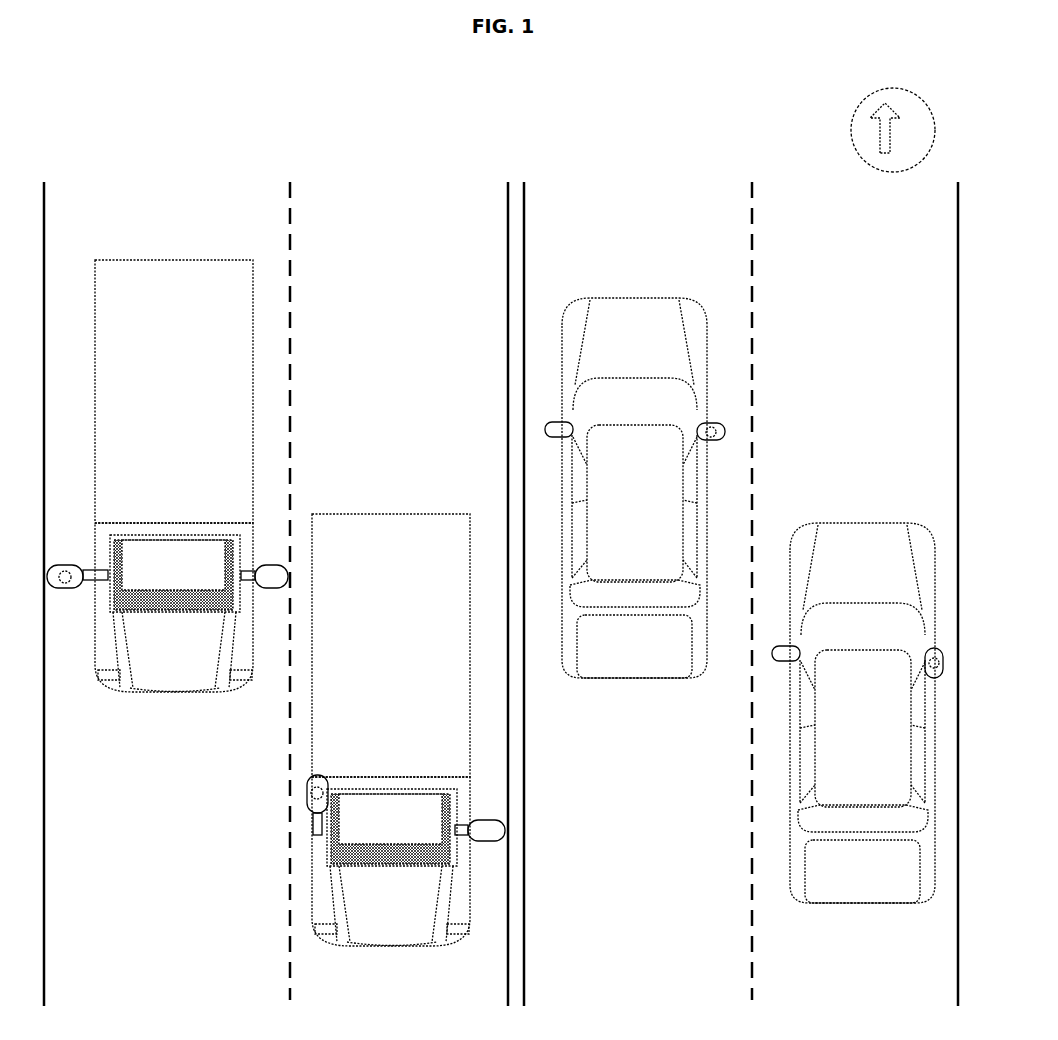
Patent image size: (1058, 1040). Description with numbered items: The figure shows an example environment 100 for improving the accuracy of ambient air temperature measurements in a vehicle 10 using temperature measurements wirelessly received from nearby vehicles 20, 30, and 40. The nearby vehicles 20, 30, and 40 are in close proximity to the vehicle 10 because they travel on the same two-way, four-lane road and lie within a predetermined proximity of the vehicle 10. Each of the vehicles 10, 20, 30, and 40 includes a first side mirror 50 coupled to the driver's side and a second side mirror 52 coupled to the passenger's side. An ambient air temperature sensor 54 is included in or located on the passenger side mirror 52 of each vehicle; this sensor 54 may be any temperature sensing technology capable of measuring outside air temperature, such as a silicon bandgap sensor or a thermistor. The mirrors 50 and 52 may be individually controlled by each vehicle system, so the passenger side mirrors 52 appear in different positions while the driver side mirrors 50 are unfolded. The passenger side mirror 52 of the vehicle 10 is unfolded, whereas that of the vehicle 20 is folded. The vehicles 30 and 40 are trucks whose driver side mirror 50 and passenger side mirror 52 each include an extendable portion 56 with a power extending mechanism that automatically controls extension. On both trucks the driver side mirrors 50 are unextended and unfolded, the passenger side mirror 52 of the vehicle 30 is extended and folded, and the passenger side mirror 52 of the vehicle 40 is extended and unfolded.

The environment 100 is at (340, 136).
The vehicle 10 is at (649, 512).
The nearby vehicle 20 is at (875, 734).
The nearby vehicle 30 is at (392, 652).
The nearby vehicle 40 is at (180, 411).
The first side mirror 50 is at (287, 567).
The second side mirror 52 is at (58, 590).
The ambient air temperature sensor 54 is at (70, 572).
The extendable portion 56 is at (91, 582).